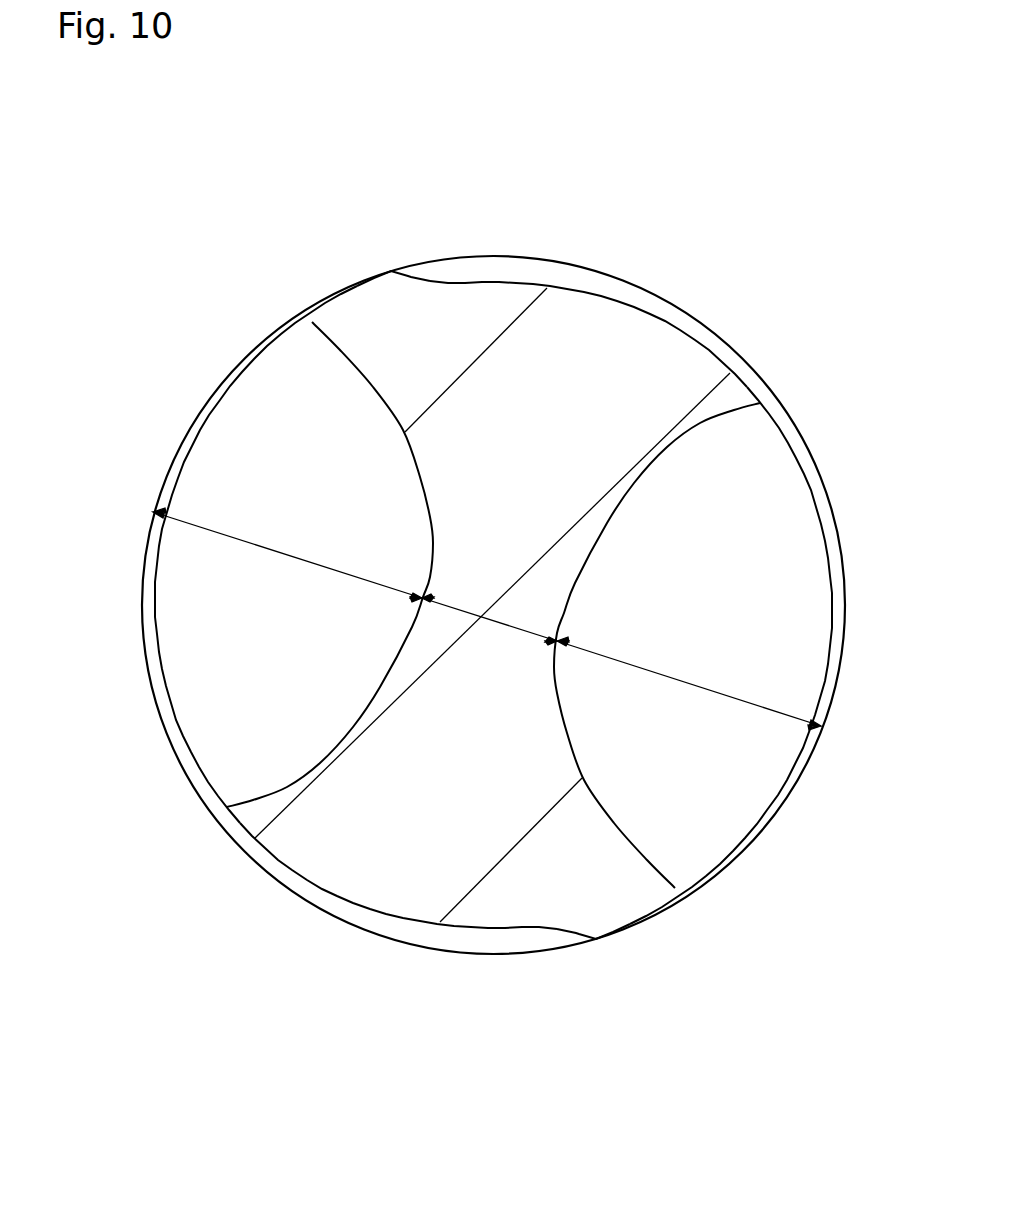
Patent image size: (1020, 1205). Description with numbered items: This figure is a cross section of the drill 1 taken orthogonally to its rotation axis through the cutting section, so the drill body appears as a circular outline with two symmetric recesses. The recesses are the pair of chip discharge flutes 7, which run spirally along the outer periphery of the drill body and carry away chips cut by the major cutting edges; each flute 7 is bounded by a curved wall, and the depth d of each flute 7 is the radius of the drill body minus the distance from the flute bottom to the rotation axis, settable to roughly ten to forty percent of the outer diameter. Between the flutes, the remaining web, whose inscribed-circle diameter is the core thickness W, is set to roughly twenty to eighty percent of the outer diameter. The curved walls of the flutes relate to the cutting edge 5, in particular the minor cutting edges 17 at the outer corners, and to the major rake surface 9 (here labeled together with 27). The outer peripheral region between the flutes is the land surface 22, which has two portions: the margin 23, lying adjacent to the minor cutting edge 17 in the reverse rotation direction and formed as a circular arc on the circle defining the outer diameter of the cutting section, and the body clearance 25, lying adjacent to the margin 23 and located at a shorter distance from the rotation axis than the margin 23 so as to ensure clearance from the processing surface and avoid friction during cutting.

The drill 1 is at (173, 326).
The cutting edge 5 is at (513, 599).
The minor cutting edge 17 is at (310, 318).
The chip discharge flute 7 is at (730, 496).
The major rake surface 9 is at (492, 605).
The central flow passage 27 is at (440, 450).
The land surface 22 is at (350, 152).
The margin 23 is at (367, 270).
The body clearance 25 is at (797, 337).